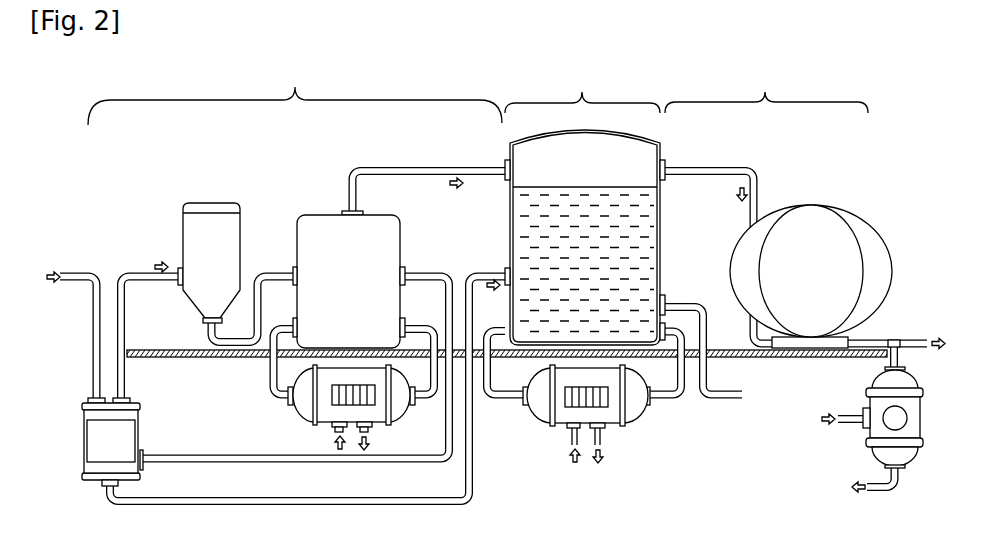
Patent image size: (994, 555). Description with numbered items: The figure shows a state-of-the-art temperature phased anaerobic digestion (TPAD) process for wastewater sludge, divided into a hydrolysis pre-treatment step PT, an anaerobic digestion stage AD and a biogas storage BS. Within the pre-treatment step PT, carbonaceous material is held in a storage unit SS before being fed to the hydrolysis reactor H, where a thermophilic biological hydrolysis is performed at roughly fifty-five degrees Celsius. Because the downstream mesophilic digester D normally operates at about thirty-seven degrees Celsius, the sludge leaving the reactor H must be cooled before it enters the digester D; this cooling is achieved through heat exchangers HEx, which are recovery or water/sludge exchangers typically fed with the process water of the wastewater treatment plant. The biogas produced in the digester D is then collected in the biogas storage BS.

The hydrolysis pre-treatment step PT is at (295, 91).
The anaerobic digestion section AD is at (582, 91).
The biogas storage BS is at (812, 232).
The storage unit SS is at (205, 235).
The biological hydrolysis reactor H is at (349, 279).
The mesophilic digester D is at (585, 237).
The heat exchanger HEx is at (373, 412).